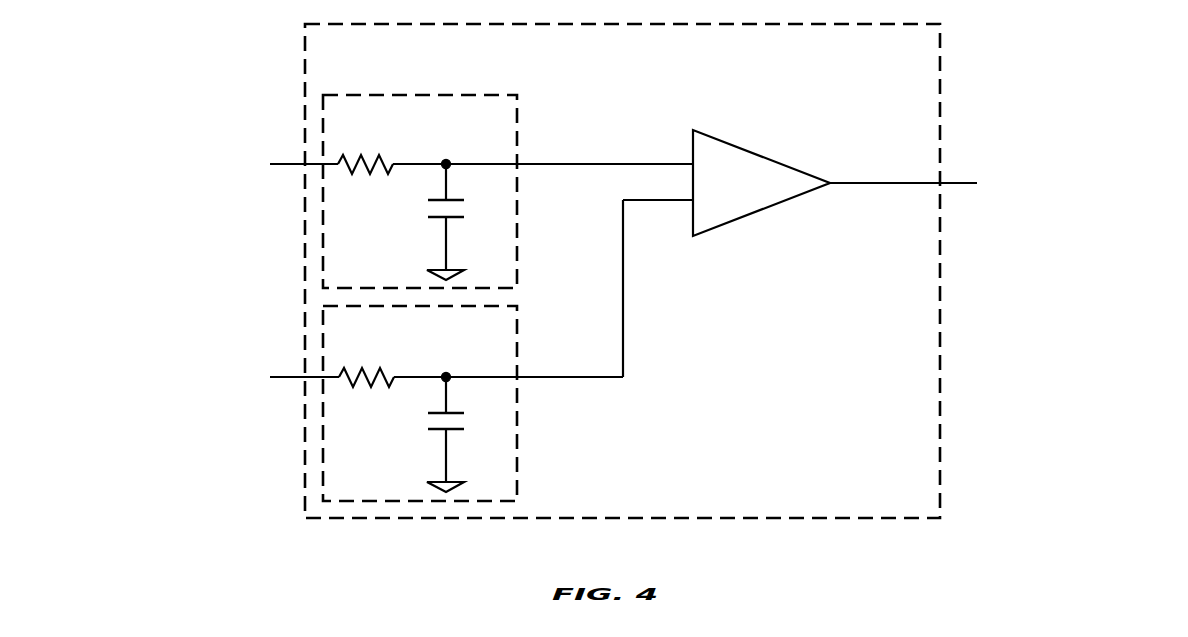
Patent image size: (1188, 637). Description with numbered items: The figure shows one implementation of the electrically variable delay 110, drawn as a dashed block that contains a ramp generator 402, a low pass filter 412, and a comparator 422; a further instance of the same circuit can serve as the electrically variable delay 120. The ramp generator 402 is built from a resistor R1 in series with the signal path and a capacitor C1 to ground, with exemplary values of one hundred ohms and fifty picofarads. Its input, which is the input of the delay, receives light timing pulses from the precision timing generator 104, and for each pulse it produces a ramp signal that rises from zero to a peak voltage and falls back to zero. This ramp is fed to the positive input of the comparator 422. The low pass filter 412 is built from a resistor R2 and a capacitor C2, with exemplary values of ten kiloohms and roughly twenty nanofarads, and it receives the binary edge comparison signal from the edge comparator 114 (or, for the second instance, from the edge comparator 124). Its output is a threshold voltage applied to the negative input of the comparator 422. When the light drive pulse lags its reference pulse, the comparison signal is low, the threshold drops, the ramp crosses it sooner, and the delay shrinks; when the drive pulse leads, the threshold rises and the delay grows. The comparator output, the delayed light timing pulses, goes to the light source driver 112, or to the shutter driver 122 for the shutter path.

The electrically variable delay 110 is at (622, 271).
The electrically variable delay 120 is at (622, 271).
The ramp generator 402 is at (508, 191).
The low pass filter 412 is at (473, 403).
The comparator 422 is at (726, 241).
The precision timing generator 104 is at (183, 155).
The light source driver 112 is at (997, 167).
The shutter driver 122 is at (997, 167).
The edge comparator 114 is at (172, 379).
The edge comparator 124 is at (172, 379).
The resistor R1 is at (365, 154).
The capacitor C1 is at (461, 222).
The resistor R2 is at (366, 368).
The capacitor C2 is at (461, 434).